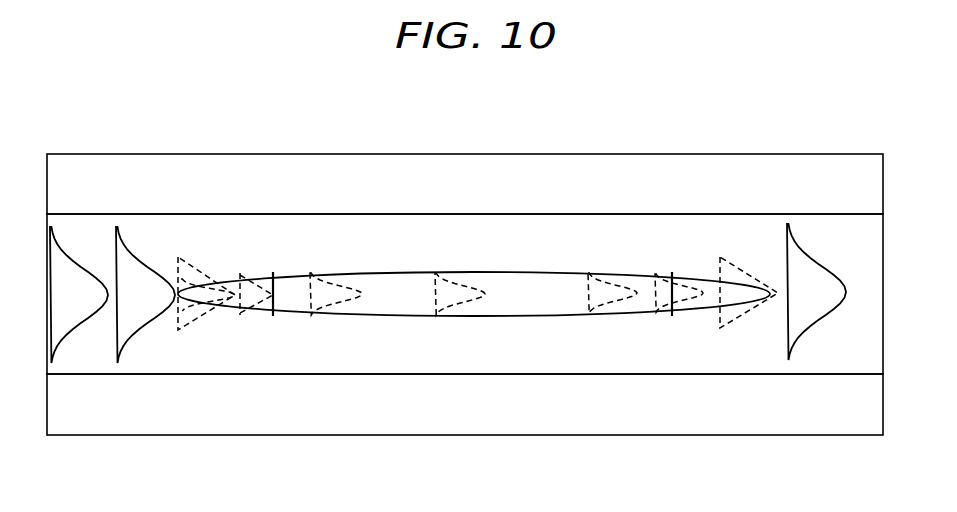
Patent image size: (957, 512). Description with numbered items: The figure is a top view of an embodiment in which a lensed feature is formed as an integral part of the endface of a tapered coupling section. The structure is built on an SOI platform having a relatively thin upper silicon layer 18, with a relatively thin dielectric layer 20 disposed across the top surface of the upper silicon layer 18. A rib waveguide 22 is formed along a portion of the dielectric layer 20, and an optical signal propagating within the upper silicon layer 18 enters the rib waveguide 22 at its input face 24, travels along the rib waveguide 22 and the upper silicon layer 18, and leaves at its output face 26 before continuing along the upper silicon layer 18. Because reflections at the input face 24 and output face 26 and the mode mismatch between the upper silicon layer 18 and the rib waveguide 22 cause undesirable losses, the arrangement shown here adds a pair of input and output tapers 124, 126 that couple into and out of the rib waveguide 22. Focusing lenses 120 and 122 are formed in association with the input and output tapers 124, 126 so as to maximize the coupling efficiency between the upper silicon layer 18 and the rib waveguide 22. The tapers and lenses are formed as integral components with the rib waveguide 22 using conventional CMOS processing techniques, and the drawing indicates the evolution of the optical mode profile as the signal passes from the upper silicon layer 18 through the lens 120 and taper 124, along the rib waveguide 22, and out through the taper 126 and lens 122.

The upper silicon layer 18 is at (126, 410).
The dielectric layer 20 is at (450, 355).
The rib waveguide 22 is at (398, 287).
The input face 24 is at (272, 300).
The output face 26 is at (672, 300).
The focusing lens 120 is at (192, 272).
The focusing lens 122 is at (766, 283).
The input taper 124 is at (235, 273).
The output taper 126 is at (703, 275).